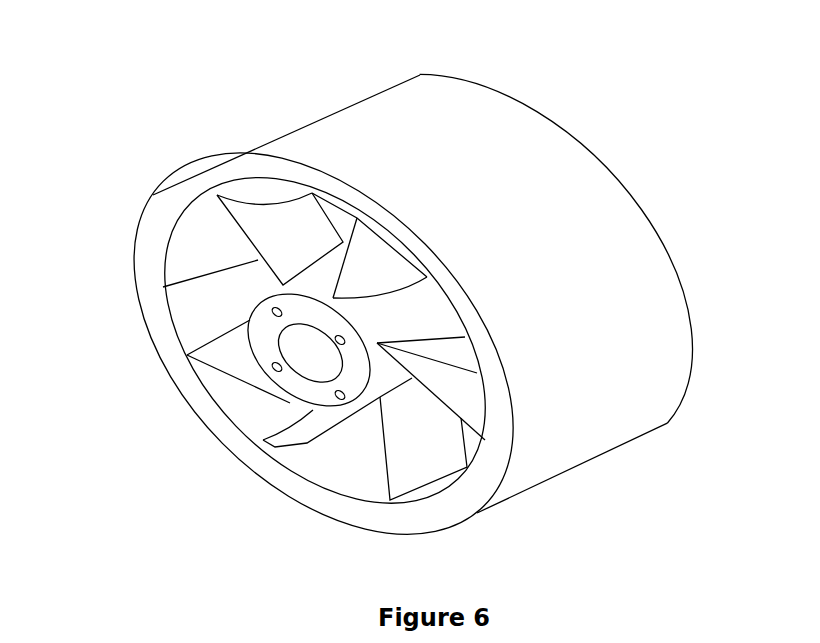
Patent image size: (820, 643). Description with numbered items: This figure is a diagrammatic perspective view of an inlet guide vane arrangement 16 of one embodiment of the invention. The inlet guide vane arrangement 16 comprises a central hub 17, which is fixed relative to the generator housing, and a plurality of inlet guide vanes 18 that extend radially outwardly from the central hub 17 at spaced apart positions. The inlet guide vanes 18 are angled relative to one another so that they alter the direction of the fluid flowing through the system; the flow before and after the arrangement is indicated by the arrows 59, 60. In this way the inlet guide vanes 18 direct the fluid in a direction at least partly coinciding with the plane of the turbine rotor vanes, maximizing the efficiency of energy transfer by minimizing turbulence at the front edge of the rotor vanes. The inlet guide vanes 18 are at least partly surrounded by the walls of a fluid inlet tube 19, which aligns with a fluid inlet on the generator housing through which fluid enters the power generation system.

The inlet guide vane arrangement 16 is at (220, 103).
The fluid inlet tube 19 is at (139, 221).
The central hub 17 is at (237, 310).
The inlet guide vanes 18 is at (290, 446).
The arrow 59 is at (363, 476).
The arrow 60 is at (680, 288).